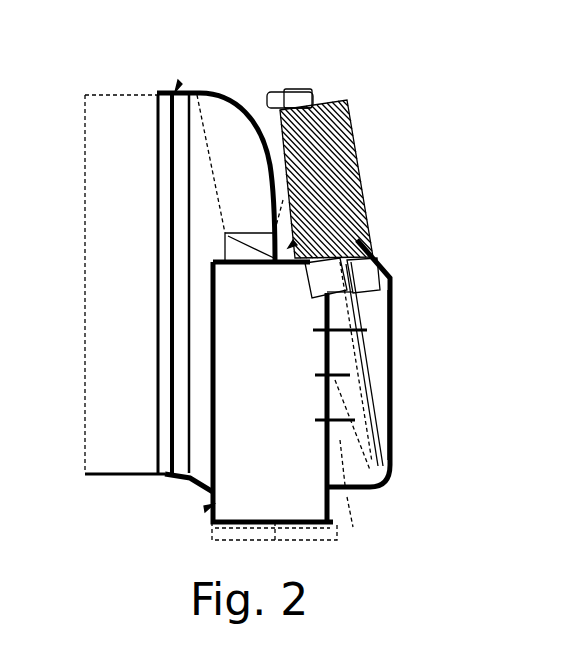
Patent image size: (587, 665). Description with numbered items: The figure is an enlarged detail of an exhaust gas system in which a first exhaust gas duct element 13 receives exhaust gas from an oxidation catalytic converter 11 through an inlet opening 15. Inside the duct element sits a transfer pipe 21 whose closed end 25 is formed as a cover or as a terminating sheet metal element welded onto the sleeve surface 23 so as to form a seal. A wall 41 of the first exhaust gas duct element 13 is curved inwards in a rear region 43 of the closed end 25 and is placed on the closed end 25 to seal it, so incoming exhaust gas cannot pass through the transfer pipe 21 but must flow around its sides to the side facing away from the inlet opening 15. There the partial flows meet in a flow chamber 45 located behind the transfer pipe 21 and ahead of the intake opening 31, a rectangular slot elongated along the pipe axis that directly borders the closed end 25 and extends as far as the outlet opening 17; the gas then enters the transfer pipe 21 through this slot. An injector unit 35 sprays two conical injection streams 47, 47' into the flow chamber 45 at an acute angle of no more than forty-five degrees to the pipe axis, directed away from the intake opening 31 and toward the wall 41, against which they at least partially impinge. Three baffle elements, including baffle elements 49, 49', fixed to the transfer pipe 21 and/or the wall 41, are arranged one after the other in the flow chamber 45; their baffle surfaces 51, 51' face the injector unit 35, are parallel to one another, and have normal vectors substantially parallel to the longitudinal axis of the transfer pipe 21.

The oxidation catalytic converter 11 is at (225, 233).
The first exhaust gas duct element 13 is at (178, 80).
The inlet opening 15 is at (165, 438).
The outlet opening 17 is at (345, 500).
The transfer pipe 21 is at (205, 512).
The sleeve surface 23 is at (213, 298).
The closed end 25 is at (122, 96).
The intake opening 31 is at (367, 493).
The injector unit 35 is at (334, 98).
The wall 41 is at (235, 92).
The rear region 43 is at (293, 240).
The flow chamber 45 is at (392, 337).
The injection stream 47 is at (410, 364).
The injection stream 47' is at (417, 364).
The baffle element 49 is at (374, 274).
The baffle element 49' is at (299, 365).
The baffle surface 51 is at (206, 284).
The baffle surface 51' is at (223, 372).